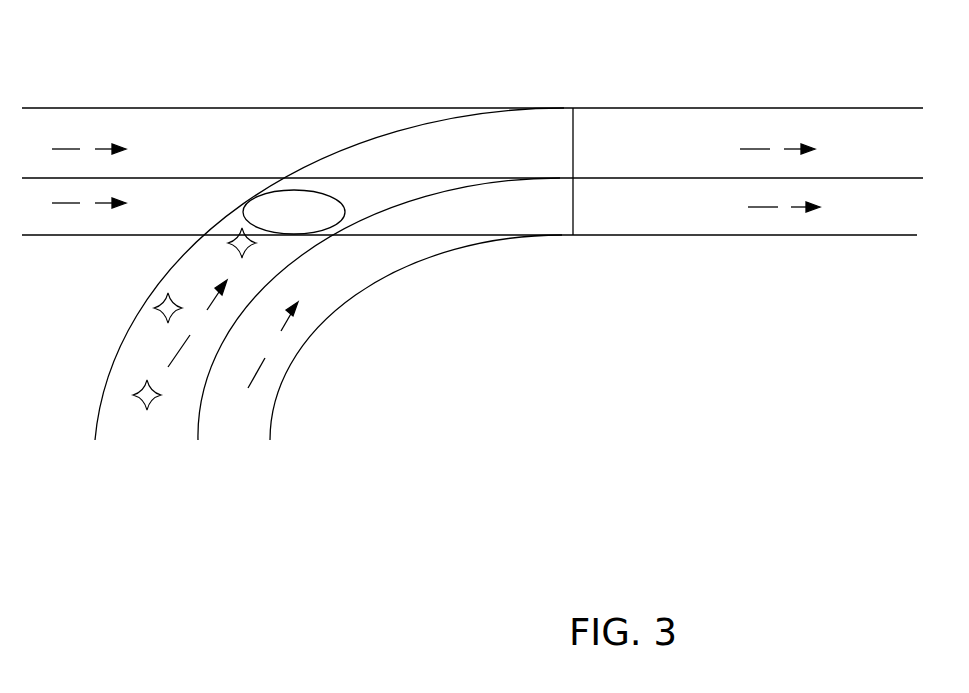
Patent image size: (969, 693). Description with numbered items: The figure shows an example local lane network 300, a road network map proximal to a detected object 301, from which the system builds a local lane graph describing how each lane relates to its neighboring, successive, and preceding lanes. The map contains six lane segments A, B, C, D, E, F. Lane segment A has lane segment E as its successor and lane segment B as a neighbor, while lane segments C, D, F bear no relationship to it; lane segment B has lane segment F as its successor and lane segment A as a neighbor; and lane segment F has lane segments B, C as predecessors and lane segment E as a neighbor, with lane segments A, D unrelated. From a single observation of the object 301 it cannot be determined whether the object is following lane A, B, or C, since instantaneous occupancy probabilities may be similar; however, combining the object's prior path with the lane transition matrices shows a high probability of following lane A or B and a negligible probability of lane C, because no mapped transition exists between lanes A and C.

The local lane network 300 is at (284, 76).
The object 301 is at (294, 212).
The lane segment A is at (197, 323).
The lane segment B is at (273, 345).
The lane segment C is at (89, 203).
The lane segment D is at (89, 149).
The lane segment E is at (777, 149).
The lane segment F is at (784, 207).